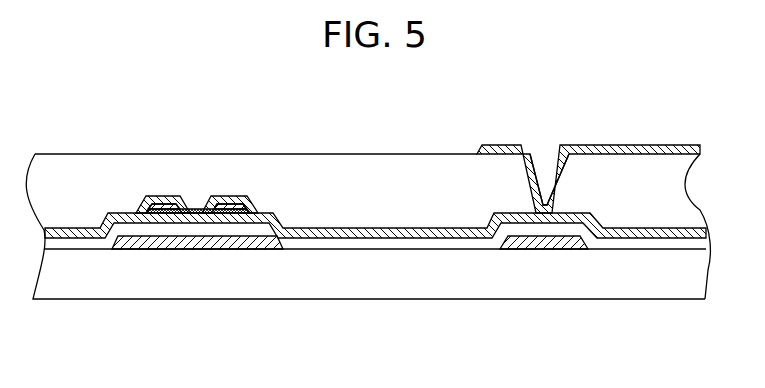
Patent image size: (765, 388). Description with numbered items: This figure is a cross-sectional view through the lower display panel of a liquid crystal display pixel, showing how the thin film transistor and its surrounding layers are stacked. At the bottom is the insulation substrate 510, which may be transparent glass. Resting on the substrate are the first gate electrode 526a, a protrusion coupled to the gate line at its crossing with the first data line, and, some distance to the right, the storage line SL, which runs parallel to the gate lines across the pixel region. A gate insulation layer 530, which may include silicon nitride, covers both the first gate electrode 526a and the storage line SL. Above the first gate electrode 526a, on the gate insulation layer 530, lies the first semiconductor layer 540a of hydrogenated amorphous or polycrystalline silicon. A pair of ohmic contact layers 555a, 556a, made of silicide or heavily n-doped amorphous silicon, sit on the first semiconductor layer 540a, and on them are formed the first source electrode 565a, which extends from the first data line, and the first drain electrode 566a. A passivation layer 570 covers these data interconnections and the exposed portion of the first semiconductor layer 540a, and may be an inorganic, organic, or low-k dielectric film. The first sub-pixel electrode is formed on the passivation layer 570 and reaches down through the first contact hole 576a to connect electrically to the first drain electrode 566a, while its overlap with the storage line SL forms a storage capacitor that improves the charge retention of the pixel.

The insulation substrate 510 is at (385, 278).
The gate insulation layer 530 is at (318, 243).
The first gate electrode 526a is at (132, 250).
The first semiconductor layer 540a is at (206, 216).
The ohmic contact layer 555a is at (158, 212).
The ohmic contact layer 556a is at (233, 214).
The first source electrode 565a is at (158, 196).
The first drain electrode 566a is at (238, 196).
The passivation layer 570 is at (442, 210).
The first contact hole 576a is at (545, 147).
The storage line SL is at (545, 250).